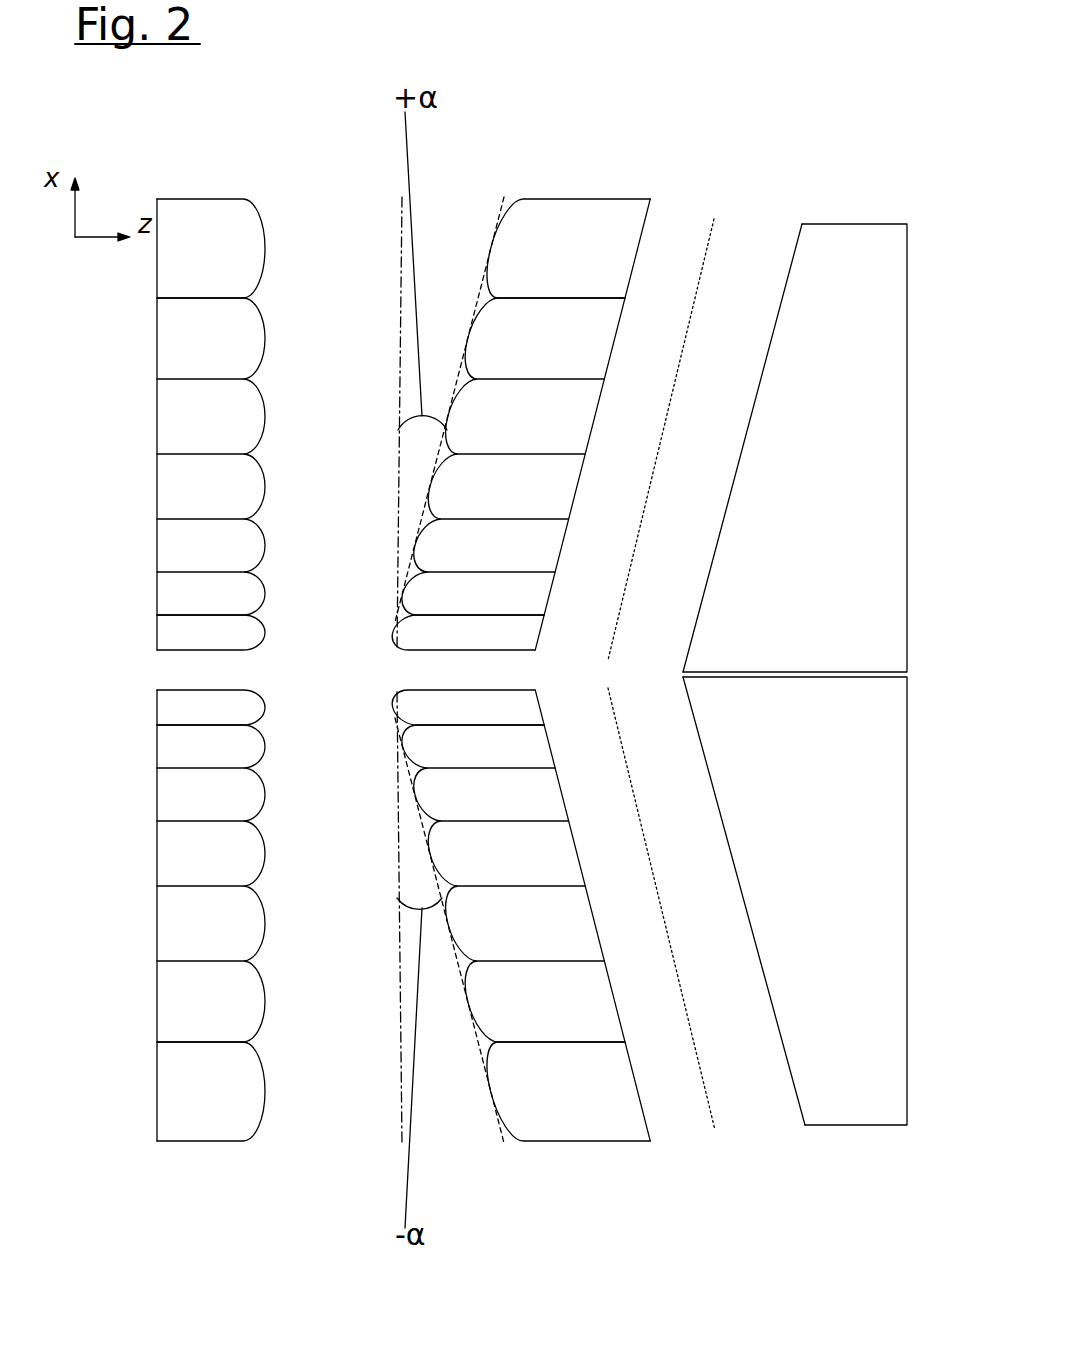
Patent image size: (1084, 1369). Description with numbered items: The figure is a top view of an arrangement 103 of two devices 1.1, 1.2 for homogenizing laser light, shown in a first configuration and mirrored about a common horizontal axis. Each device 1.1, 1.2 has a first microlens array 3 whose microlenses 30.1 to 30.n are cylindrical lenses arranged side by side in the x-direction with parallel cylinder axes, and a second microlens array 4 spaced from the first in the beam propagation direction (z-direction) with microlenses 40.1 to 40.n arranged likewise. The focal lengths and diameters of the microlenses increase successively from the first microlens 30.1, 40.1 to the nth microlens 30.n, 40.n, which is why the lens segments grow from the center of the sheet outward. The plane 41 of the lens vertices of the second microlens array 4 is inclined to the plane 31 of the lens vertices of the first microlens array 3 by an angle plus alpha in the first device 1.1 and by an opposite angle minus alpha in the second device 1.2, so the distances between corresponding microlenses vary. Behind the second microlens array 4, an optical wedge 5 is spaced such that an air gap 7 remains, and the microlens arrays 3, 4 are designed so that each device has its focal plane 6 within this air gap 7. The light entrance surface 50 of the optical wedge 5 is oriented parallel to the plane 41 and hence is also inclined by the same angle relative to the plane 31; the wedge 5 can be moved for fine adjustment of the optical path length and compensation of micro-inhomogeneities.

The first device for homogenizing laser light 1.1 is at (117, 478).
The second device for homogenizing laser light 1.2 is at (117, 1068).
The first microlens array 3 is at (157, 355).
The first microlens of the first microlens array 30.1 is at (230, 627).
The nth microlens of the first microlens array 30.n is at (222, 230).
The plane of the lens vertices of the first microlens array 31 is at (401, 325).
The second microlens array 4 is at (648, 234).
The first microlens of the second microlens array 40.1 is at (415, 637).
The nth microlens of the second microlens array 40.n is at (600, 225).
The plane of the lens vertices of the second microlens array 41 is at (460, 378).
The optical wedge 5 is at (872, 557).
The light entrance surface 50 is at (702, 603).
The focal plane 6 is at (702, 273).
The air gap 7 is at (720, 430).
The arrangement 103 is at (275, 1240).